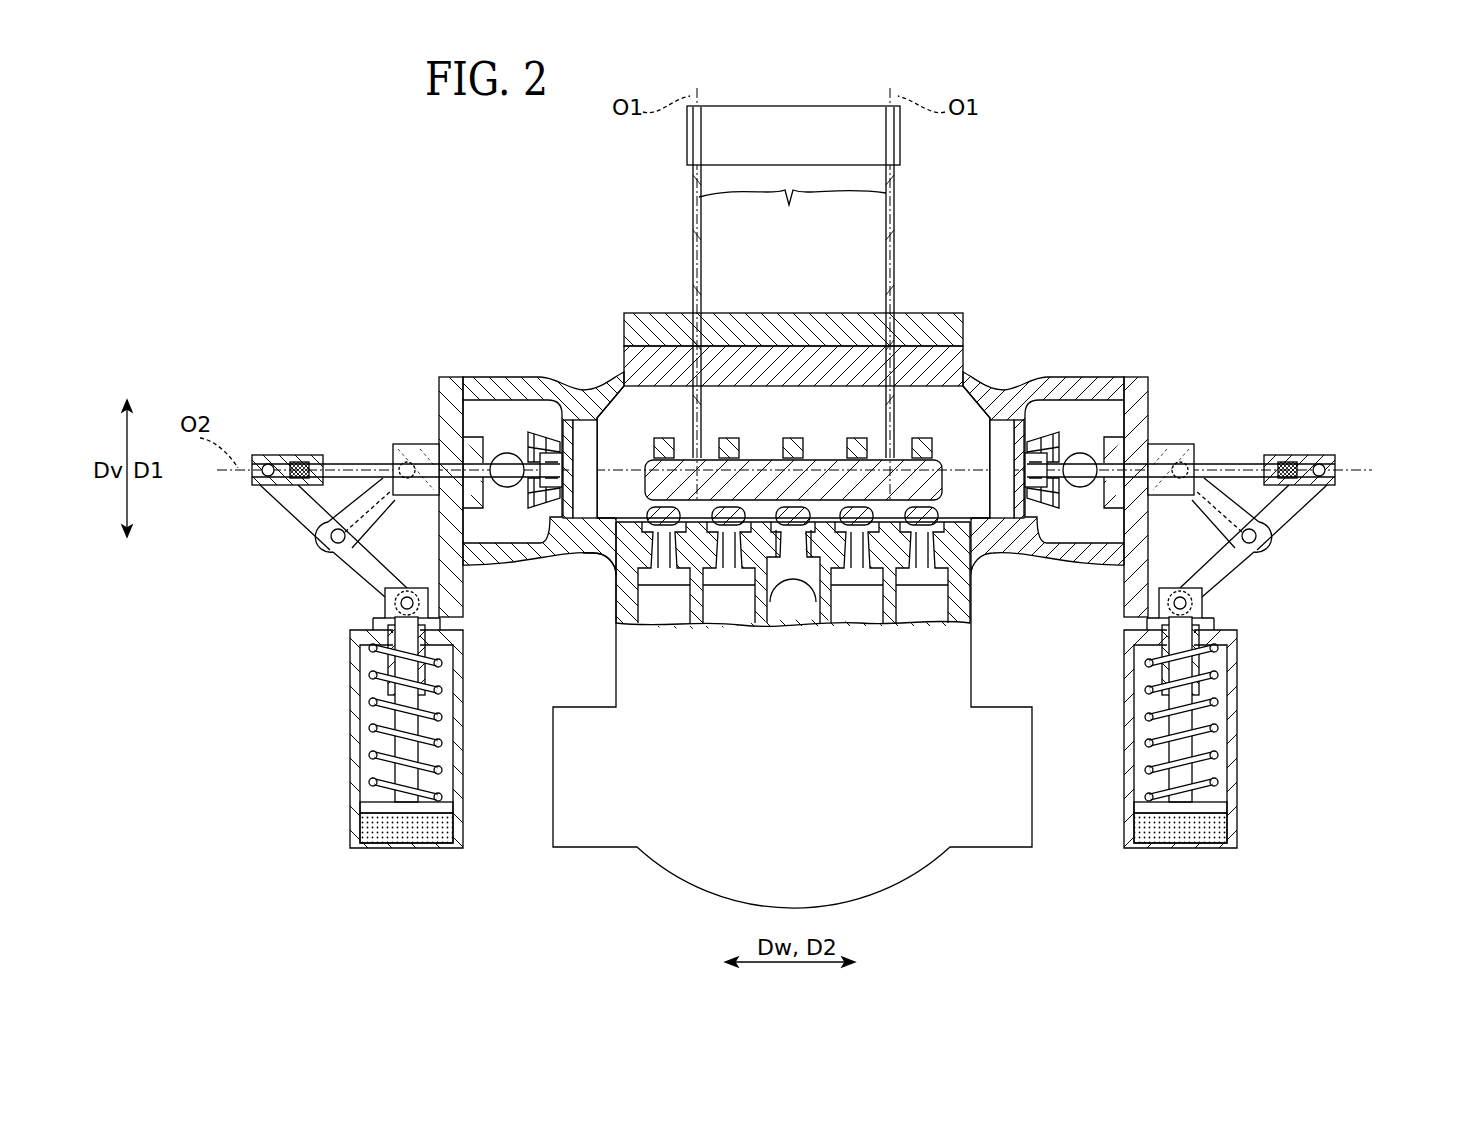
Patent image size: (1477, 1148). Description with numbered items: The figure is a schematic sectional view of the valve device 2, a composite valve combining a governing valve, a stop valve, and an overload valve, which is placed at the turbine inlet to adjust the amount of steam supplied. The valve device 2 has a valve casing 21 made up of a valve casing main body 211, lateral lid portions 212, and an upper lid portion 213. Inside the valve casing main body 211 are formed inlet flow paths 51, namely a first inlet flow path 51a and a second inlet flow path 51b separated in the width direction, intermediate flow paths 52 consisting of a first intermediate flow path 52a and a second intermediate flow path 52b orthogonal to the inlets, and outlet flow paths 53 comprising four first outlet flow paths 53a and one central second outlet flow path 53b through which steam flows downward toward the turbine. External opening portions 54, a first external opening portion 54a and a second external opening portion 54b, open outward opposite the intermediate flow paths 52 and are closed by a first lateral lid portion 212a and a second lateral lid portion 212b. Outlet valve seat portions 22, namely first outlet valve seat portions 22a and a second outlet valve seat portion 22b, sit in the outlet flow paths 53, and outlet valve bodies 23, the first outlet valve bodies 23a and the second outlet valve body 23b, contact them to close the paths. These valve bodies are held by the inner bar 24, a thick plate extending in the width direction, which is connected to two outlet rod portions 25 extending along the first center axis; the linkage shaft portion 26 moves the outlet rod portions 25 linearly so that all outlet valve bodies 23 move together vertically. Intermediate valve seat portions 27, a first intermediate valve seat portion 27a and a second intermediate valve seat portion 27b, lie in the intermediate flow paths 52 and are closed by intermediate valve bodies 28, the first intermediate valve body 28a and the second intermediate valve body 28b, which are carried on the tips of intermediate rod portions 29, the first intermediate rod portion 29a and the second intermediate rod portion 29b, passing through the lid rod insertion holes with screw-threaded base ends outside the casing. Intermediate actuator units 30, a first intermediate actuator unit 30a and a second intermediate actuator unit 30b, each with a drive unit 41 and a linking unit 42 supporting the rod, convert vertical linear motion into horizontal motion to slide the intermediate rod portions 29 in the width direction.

The valve device 2 is at (1205, 113).
The valve casing 21 is at (974, 672).
The valve casing main body 211 is at (602, 580).
The lateral lid portions 212 is at (779, 459).
The first lateral lid portion 212a is at (420, 443).
The second lateral lid portion 212b is at (1168, 443).
The upper lid portion 213 is at (773, 322).
The outlet valve seat portions 22 is at (797, 741).
The first outlet valve seat portions 22a is at (640, 570).
The second outlet valve seat portion 22b is at (776, 560).
The outlet valve bodies 23 is at (802, 726).
The first outlet valve bodies 23a is at (645, 580).
The second outlet valve body 23b is at (786, 560).
The inner bar 24 is at (840, 458).
The outlet rod portions 25 is at (792, 214).
The linkage shaft portion 26 is at (803, 112).
The intermediate valve seat portions 27 is at (788, 360).
The first intermediate valve seat portion 27a is at (585, 425).
The second intermediate valve seat portion 27b is at (1002, 425).
The intermediate valve bodies 28 is at (795, 378).
The first intermediate valve body 28a is at (568, 420).
The second intermediate valve body 28b is at (1019, 420).
The intermediate rod portions 29 is at (793, 425).
The first intermediate rod portion 29a is at (400, 463).
The second intermediate rod portion 29b is at (1180, 463).
The intermediate actuator units 30 is at (783, 663).
The first intermediate actuator unit 30a is at (728, 663).
The second intermediate actuator unit 30b is at (1322, 630).
The drive unit 41 is at (342, 697).
The linking unit 42 is at (312, 512).
The inlet flow paths 51 is at (801, 382).
The first inlet flow path 51a is at (506, 452).
The second inlet flow path 51b is at (1081, 452).
The intermediate flow paths 52 is at (794, 282).
The first intermediate flow path 52a is at (694, 232).
The second intermediate flow path 52b is at (896, 232).
The outlet flow paths 53 is at (811, 721).
The first outlet flow paths 53a is at (690, 560).
The second outlet flow path 53b is at (810, 560).
The external opening portions 54 is at (873, 418).
The first external opening portion 54a is at (540, 435).
The second external opening portion 54b is at (1050, 495).